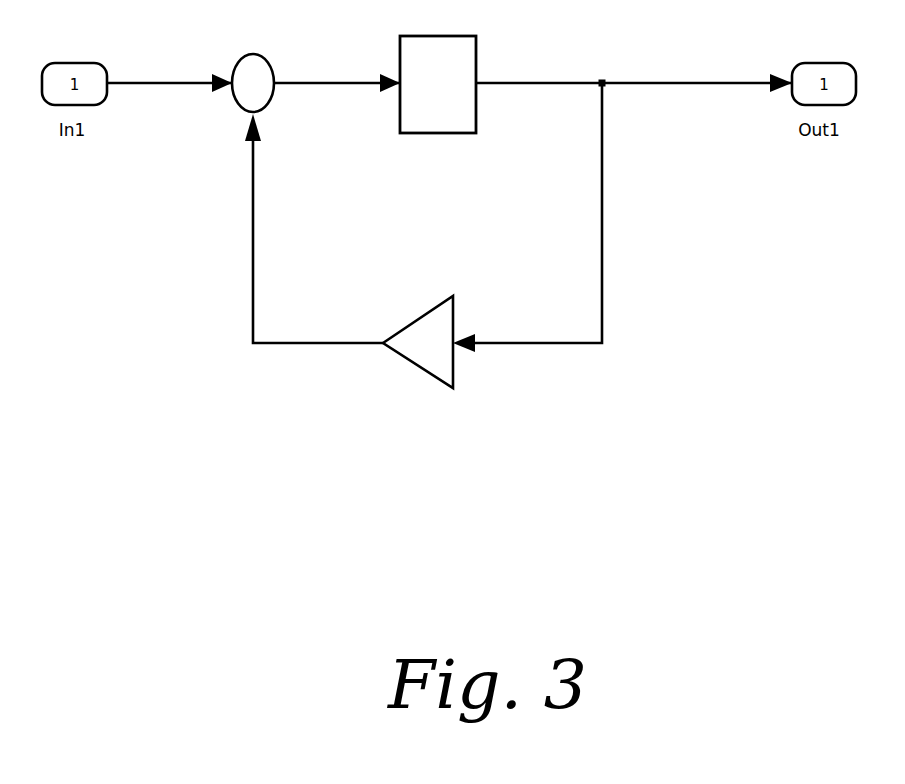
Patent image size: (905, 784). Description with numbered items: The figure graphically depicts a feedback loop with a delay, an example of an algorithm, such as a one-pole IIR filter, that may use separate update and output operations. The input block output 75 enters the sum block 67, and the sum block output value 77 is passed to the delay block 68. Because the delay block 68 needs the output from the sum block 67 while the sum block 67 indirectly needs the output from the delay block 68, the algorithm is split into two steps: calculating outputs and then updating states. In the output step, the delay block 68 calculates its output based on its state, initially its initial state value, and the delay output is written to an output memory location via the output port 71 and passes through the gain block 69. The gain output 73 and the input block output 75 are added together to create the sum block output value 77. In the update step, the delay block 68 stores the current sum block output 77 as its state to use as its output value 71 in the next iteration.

The sum block 67 is at (210, 177).
The delay block 68 is at (449, 203).
The gain block 69 is at (486, 427).
The output port 71 is at (506, 77).
The gain output 73 is at (373, 342).
The input block output 75 is at (144, 77).
The sum block output value 77 is at (303, 77).